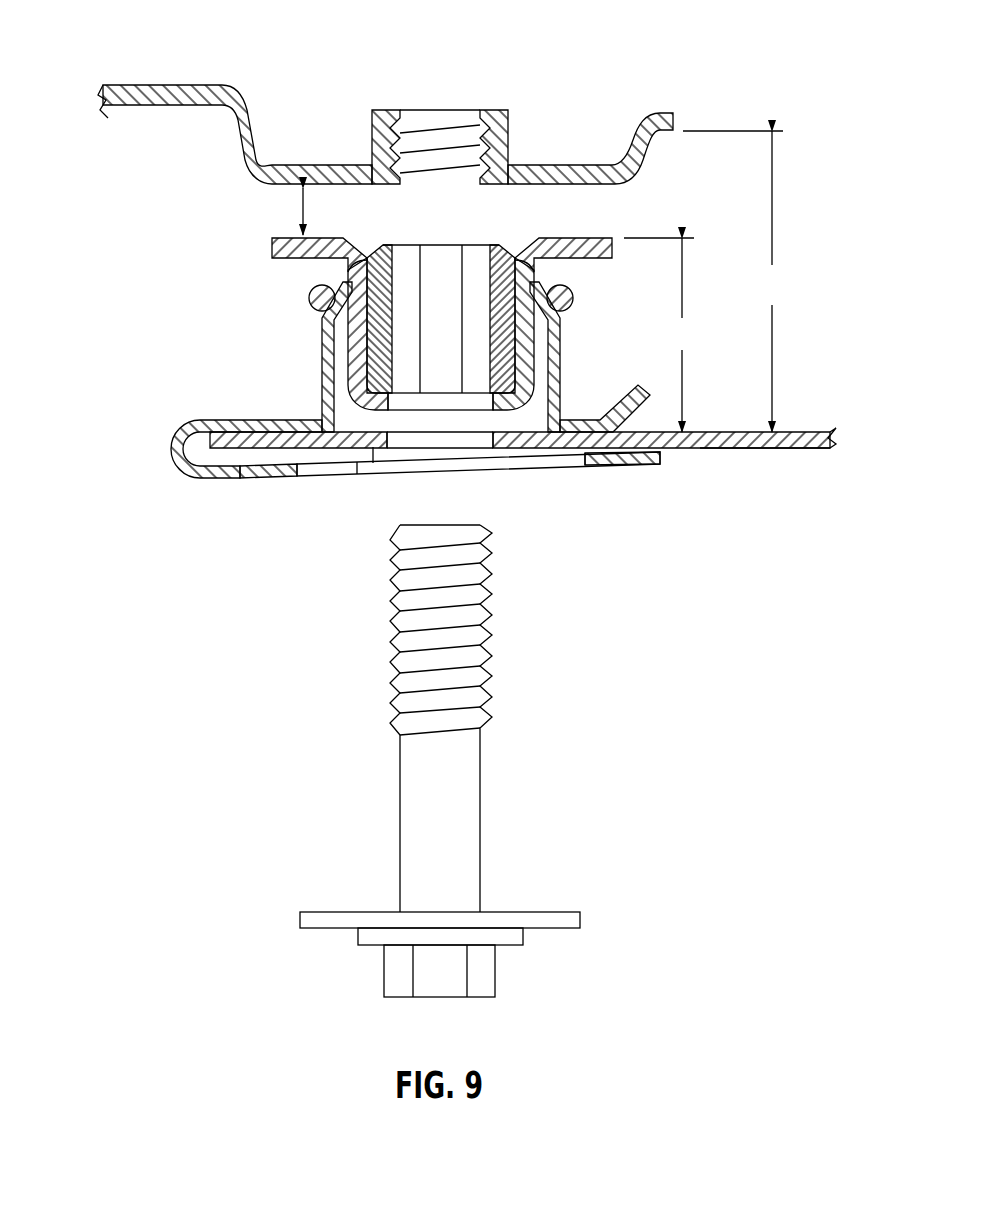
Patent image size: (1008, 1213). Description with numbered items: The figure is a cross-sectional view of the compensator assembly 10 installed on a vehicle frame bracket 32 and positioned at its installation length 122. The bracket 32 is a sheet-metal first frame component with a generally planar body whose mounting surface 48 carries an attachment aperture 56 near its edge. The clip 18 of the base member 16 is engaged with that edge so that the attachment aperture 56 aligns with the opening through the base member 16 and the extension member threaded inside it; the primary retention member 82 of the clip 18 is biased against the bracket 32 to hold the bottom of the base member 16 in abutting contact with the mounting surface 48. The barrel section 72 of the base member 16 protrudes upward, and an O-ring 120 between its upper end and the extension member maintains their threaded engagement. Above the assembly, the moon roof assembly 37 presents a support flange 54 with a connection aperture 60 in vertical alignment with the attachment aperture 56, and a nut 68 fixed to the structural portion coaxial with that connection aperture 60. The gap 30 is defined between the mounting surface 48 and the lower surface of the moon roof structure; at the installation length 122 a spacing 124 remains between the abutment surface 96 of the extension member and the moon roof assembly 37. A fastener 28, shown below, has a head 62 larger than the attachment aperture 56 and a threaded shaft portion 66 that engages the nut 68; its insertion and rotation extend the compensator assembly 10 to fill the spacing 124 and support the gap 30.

The compensator assembly 10 is at (180, 266).
The base member 16 is at (356, 410).
The clip 18 is at (385, 492).
The fastener 28 is at (454, 778).
The gap 30 is at (733, 281).
The bracket 32 is at (810, 450).
The moon roof assembly 37 is at (170, 80).
The mounting surface 48 is at (815, 434).
The support flange 54 is at (316, 168).
The attachment aperture 56 is at (460, 436).
The connection aperture 60 is at (472, 101).
The head 62 is at (508, 975).
The threaded shaft portion 66 is at (493, 606).
The nut 68 is at (507, 118).
The barrel section 72 is at (332, 360).
The primary retention member 82 is at (251, 478).
The abutment surface 96 is at (578, 238).
The O-ring 120 is at (576, 297).
The installation length 122 is at (659, 335).
The spacing 124 is at (298, 207).